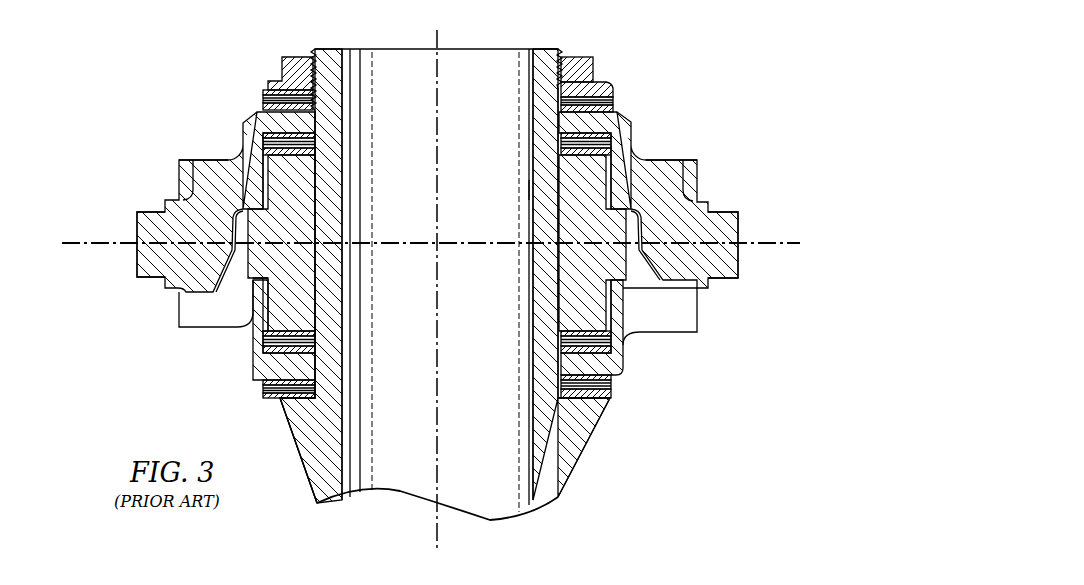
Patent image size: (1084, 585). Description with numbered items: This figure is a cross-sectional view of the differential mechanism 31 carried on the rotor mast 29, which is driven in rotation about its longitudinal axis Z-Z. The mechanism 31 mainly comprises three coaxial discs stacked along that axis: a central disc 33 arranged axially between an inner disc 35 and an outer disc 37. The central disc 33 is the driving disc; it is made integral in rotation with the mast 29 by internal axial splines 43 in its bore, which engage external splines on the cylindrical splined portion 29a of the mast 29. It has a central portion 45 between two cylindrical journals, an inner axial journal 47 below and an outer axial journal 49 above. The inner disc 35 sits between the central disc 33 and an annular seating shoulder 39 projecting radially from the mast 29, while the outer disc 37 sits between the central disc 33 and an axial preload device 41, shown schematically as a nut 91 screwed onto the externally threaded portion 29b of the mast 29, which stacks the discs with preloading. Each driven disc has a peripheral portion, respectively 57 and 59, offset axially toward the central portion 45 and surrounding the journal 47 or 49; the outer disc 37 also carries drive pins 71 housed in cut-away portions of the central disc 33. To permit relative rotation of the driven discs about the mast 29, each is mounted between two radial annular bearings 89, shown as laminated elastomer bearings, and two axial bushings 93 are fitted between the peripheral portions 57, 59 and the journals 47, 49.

The mast 29 is at (577, 458).
The cylindrical splined portion 29a is at (528, 190).
The externally threaded portion 29b is at (545, 48).
The differential mechanism 31 is at (190, 40).
The central disc 33 is at (246, 268).
The inner disc 35 is at (248, 376).
The outer disc 37 is at (249, 112).
The seating shoulder 39 is at (296, 456).
The axial preload device 41 is at (278, 66).
The internal axial splines 43 is at (313, 208).
The central portion 45 is at (633, 240).
The inner axial journal 47 is at (593, 297).
The outer axial journal 49 is at (688, 163).
The peripheral portion 57 is at (243, 347).
The peripheral portion 59 is at (215, 160).
The drive pins 71 is at (136, 250).
The radial annular bearings 89 is at (612, 88).
The nut 91 is at (597, 57).
The axial bushings 93 is at (611, 173).